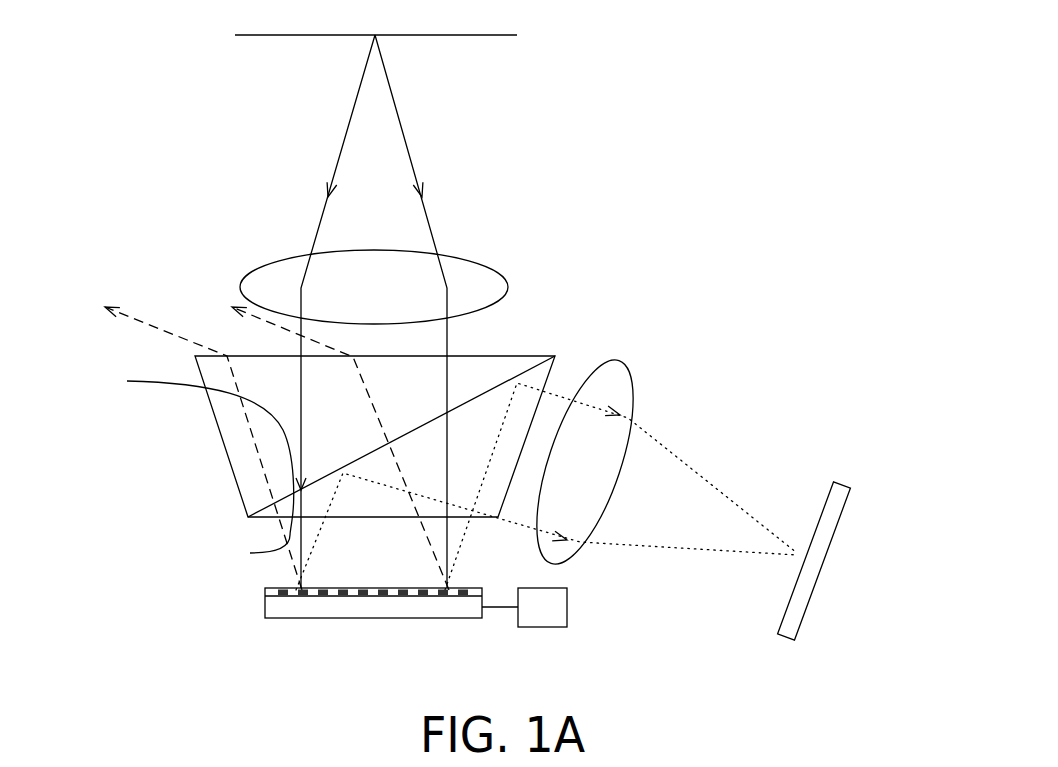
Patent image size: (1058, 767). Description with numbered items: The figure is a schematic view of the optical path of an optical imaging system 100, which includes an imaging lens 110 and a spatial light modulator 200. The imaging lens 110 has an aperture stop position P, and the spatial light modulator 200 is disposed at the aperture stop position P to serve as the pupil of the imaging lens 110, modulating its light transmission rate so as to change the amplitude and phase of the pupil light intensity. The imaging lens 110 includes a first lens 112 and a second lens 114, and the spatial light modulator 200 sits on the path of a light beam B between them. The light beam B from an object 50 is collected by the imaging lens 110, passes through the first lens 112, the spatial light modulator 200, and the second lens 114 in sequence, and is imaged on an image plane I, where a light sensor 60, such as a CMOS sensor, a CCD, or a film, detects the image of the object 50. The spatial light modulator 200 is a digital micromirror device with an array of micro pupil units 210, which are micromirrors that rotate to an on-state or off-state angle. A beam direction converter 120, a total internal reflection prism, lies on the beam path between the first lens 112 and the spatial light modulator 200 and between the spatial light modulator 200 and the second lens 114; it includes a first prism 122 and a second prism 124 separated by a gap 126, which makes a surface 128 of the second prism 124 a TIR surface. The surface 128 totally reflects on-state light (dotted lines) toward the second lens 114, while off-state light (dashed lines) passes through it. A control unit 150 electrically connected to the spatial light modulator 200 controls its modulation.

The object 50 is at (480, 33).
The light beam B is at (407, 147).
The imaging lens 110 is at (499, 412).
The first lens 112 is at (491, 289).
The second lens 114 is at (618, 387).
The beam direction converter 120 is at (311, 464).
The first prism 122 is at (219, 428).
The second prism 124 is at (266, 514).
The gap 126 is at (250, 553).
The surface 128 is at (190, 451).
The spatial light modulator 200 is at (400, 612).
The micro pupil units 210 is at (463, 585).
The control unit 150 is at (567, 612).
The light sensor 60 is at (802, 598).
The image plane I is at (856, 466).
The aperture stop position P is at (236, 593).
The optical imaging system 100 is at (785, 700).